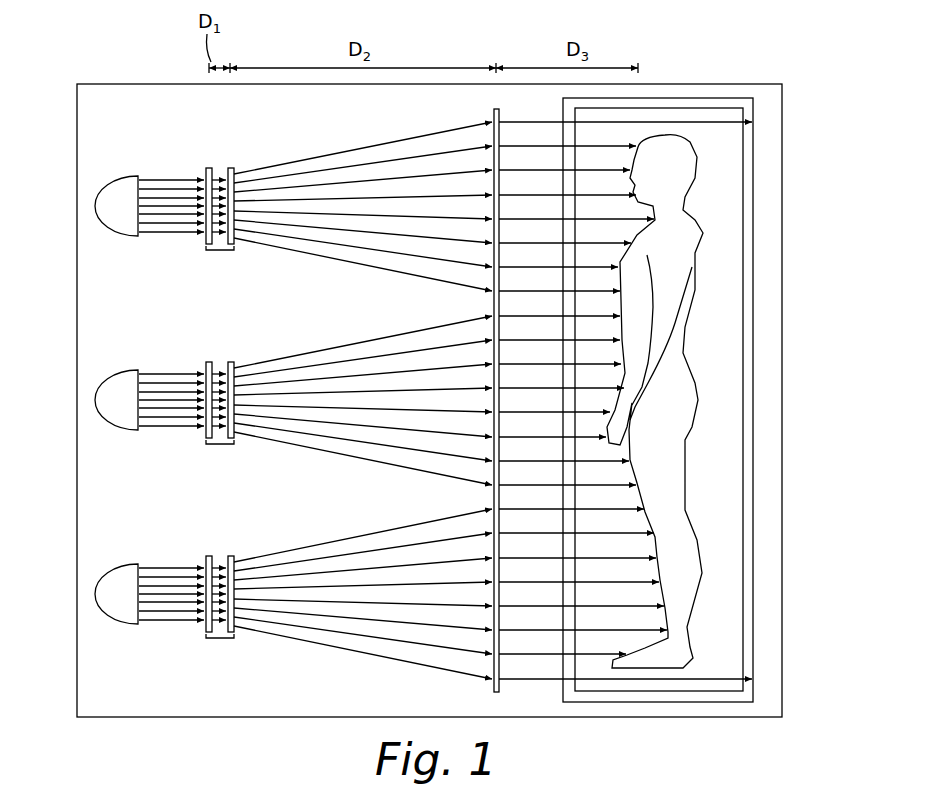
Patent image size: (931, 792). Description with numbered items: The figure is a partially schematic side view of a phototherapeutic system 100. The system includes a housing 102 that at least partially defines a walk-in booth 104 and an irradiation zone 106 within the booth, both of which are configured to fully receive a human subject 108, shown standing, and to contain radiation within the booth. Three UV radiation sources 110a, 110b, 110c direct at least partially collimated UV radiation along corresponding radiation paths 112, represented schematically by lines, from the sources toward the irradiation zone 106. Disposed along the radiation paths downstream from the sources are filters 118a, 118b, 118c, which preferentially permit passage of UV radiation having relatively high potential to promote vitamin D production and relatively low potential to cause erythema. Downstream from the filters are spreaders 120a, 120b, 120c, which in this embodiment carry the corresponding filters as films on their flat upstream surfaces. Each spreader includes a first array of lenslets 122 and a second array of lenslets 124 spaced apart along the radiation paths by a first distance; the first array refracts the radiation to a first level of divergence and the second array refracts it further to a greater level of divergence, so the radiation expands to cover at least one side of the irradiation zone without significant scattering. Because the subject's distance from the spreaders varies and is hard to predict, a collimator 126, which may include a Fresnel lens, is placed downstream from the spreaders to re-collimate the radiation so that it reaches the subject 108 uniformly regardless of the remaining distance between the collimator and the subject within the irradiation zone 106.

The phototherapeutic system 100 is at (746, 46).
The housing 102 is at (133, 84).
The walk-in booth 104 is at (755, 168).
The irradiation zone 106 is at (746, 300).
The human subject 108 is at (690, 222).
The UV radiation source 110a is at (133, 176).
The UV radiation source 110b is at (133, 370).
The UV radiation source 110c is at (133, 564).
The radiation paths 112 is at (335, 154).
The filter 118a is at (215, 168).
The filter 118b is at (206, 362).
The filter 118c is at (207, 556).
The spreader 120a is at (220, 252).
The spreader 120b is at (220, 446).
The spreader 120c is at (220, 640).
The first array of lenslets 122 is at (212, 168).
The second array of lenslets 124 is at (232, 168).
The collimator 126 is at (490, 300).